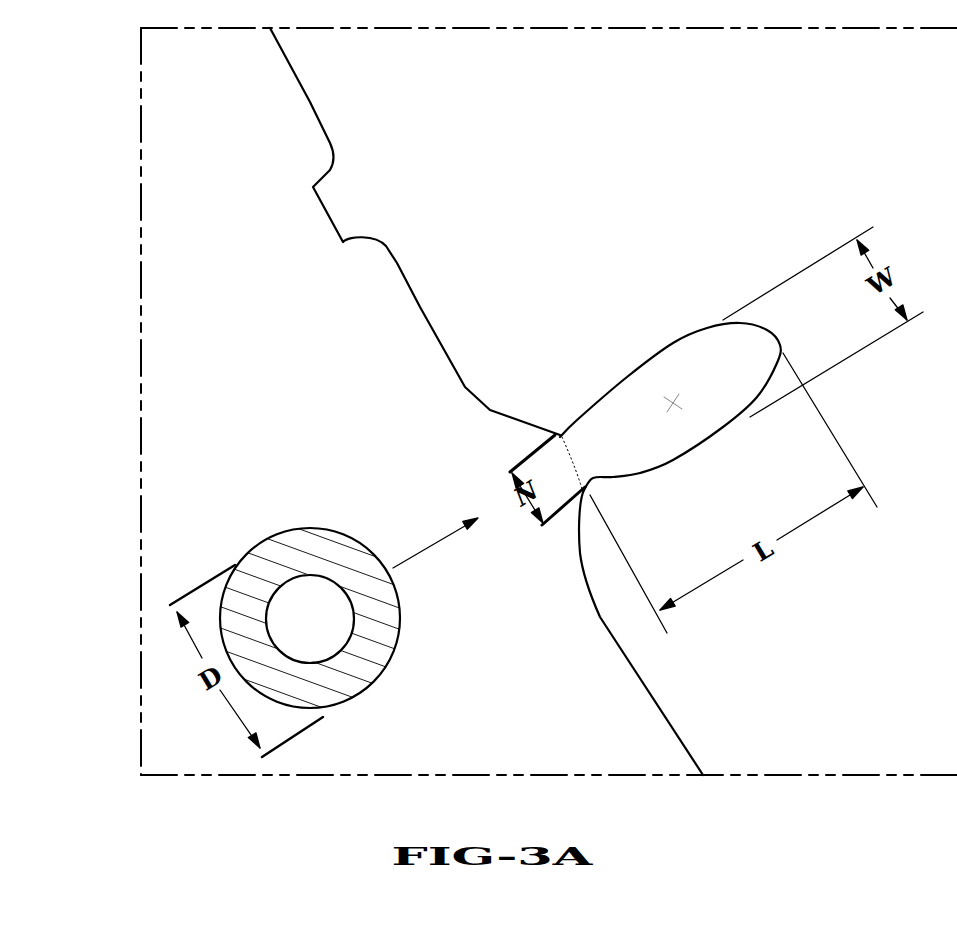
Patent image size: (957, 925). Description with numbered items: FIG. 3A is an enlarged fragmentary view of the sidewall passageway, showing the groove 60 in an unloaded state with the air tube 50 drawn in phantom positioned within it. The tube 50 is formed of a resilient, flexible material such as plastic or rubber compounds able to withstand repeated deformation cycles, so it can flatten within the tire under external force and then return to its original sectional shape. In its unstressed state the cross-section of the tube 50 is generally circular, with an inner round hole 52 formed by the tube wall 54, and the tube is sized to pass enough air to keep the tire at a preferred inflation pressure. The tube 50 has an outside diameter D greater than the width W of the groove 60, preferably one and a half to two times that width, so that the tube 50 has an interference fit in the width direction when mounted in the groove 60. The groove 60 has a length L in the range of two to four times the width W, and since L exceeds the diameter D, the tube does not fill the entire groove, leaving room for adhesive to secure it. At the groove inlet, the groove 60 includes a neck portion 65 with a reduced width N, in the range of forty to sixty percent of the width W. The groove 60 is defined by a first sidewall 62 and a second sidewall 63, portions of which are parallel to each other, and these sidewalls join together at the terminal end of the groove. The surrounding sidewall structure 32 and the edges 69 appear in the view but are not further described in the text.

The substrate edge 32 is at (343, 82).
The air tube 50 is at (333, 575).
The inner round hole 52 is at (316, 595).
The tube wall 54 is at (358, 657).
The groove 60 is at (782, 332).
The first sidewall 62 is at (659, 358).
The second sidewall 63 is at (692, 446).
The neck portion 65 is at (552, 430).
The edge 69 is at (487, 407).